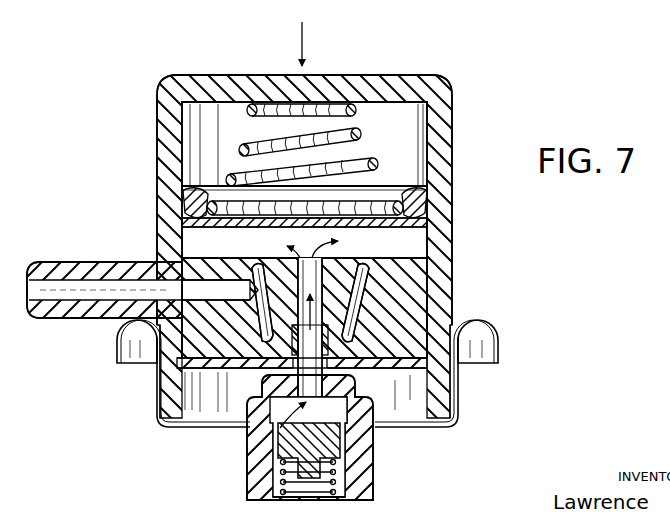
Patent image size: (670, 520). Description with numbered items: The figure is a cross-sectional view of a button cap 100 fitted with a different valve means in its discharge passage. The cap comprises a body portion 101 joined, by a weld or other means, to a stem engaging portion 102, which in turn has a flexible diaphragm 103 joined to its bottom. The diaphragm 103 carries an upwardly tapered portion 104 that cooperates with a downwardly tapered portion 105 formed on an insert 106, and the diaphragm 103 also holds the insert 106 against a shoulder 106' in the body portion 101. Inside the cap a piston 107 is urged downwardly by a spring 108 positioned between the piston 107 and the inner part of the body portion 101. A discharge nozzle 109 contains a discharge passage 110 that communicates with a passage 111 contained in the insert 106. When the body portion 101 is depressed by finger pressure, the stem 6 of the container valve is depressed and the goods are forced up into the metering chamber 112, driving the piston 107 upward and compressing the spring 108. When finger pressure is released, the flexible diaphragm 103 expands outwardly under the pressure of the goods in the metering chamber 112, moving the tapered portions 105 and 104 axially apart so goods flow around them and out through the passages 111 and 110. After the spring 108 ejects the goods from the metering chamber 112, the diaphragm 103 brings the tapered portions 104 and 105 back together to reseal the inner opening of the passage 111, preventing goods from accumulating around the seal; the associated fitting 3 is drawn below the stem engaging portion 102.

The button cap 100 is at (125, 147).
The body portion 101 is at (407, 291).
The stem engaging portion 102 is at (365, 364).
The flexible diaphragm 103 is at (210, 384).
The upwardly tapered portion 104 is at (187, 355).
The downwardly tapered portion 105 is at (274, 258).
The insert 106 is at (375, 303).
The shoulder 106' is at (430, 258).
The piston 107 is at (182, 190).
The spring 108 is at (374, 133).
The discharge nozzle 109 is at (66, 270).
The discharge passage 110 is at (78, 302).
The passage 111 is at (180, 259).
The metering chamber 112 is at (398, 240).
The valve fitting 3 is at (210, 465).
The stem 6 is at (326, 434).